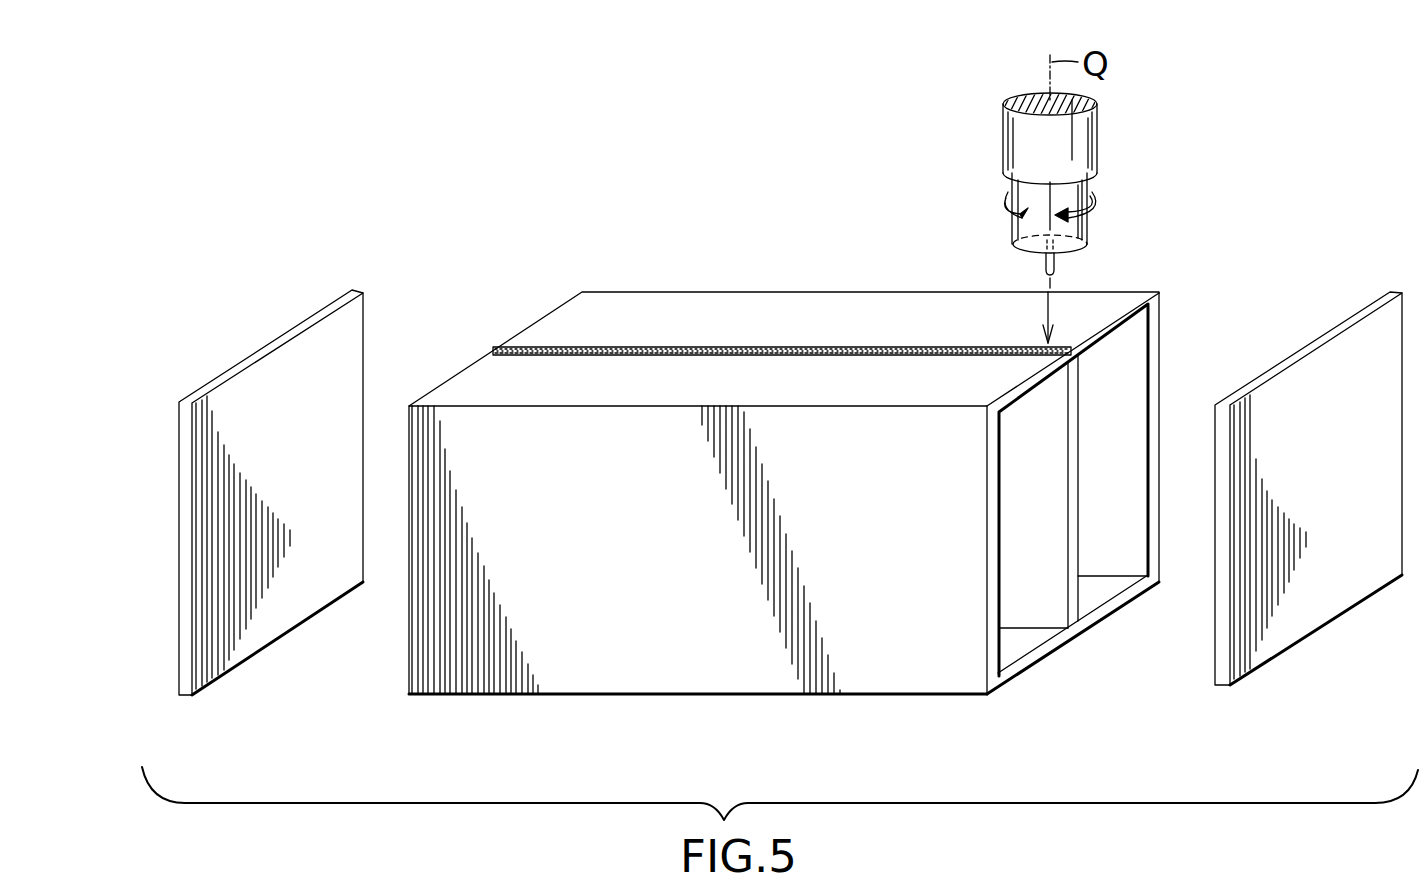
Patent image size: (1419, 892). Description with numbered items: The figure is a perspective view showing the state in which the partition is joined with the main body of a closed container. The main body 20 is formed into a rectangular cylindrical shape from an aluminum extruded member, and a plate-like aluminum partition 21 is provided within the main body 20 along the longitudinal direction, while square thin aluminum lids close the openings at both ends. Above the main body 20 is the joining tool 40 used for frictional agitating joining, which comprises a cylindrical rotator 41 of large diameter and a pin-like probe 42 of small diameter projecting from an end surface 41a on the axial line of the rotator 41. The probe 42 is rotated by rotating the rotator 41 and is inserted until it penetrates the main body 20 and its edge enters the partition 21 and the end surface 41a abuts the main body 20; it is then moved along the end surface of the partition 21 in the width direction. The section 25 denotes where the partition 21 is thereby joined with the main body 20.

The main body 20 is at (715, 694).
The partition 21 is at (1040, 590).
The joined section 25 is at (762, 345).
The joining tool 40 is at (1107, 100).
The rotator 41 is at (1012, 188).
The end surface 41a is at (1012, 255).
The probe 42 is at (1054, 259).